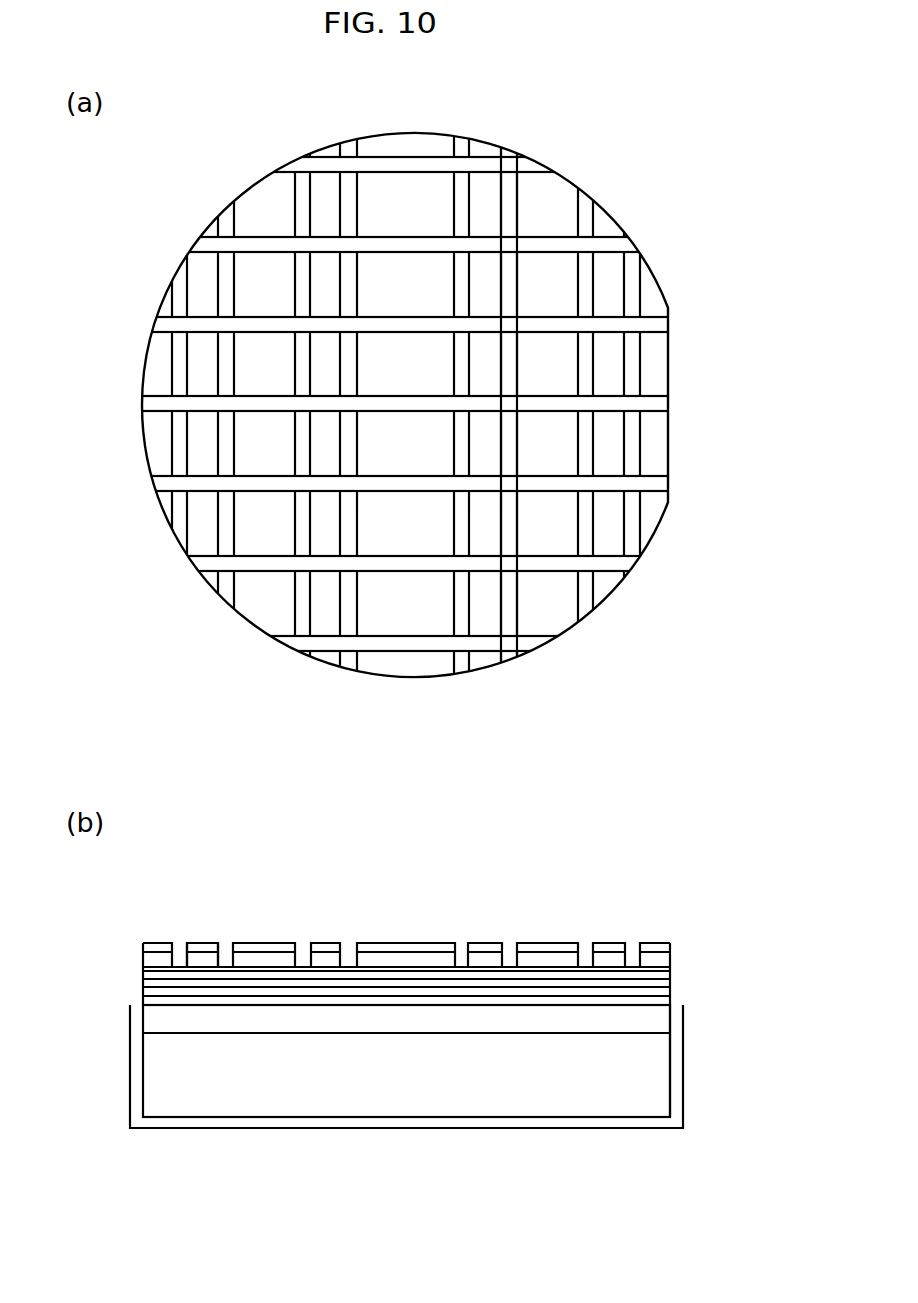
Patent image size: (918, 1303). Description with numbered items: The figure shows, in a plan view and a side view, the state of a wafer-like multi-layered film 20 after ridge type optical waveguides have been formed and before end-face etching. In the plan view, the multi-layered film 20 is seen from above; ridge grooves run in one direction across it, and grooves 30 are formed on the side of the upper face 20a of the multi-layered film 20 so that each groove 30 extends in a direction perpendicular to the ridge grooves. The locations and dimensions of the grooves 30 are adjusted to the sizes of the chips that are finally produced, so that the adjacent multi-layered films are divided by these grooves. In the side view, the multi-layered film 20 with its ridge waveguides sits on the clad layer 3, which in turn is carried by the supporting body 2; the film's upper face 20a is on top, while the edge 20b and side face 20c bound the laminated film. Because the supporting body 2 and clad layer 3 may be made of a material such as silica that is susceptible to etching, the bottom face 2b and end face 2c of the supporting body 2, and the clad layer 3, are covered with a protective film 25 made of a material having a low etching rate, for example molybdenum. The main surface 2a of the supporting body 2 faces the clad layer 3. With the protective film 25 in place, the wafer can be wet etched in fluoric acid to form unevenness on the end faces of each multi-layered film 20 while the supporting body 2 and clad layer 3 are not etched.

The supporting body 2 is at (442, 1095).
The first main surface of substrate 2a is at (420, 1033).
The bottom face of supporting body 2b is at (598, 1117).
The end face of supporting body 2c is at (672, 1058).
The clad layer 3 is at (660, 1020).
The multi-layered film 20 is at (422, 379).
The upper face of multi-layered film 20a is at (423, 937).
The outer edge of wafer 20b is at (403, 939).
The side surface of wafer 20c is at (143, 967).
The protective film 25 is at (683, 1120).
The groove 30 is at (410, 404).